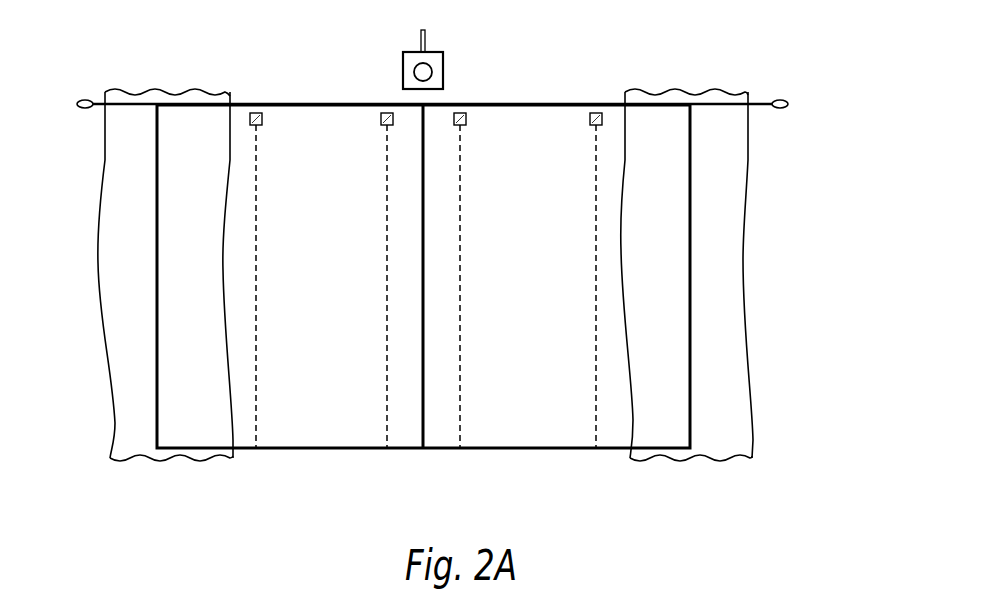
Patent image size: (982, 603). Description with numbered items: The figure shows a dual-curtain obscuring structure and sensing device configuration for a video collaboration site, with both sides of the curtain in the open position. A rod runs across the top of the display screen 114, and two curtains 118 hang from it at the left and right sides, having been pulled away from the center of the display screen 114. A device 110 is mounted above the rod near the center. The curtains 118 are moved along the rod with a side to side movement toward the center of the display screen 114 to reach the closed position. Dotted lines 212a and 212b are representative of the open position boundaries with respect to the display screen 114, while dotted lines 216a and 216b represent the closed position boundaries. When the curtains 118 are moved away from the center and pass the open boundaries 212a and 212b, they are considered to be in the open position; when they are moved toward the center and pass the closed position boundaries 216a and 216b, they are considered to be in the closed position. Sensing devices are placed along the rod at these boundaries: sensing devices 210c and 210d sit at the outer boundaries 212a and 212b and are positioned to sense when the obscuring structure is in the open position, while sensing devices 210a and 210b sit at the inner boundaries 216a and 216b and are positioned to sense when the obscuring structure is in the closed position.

The sensor device / controller 110 is at (438, 60).
The display screen 114 is at (582, 449).
The curtains 118 is at (653, 240).
The sensing device 210a is at (381, 122).
The sensing device 210b is at (466, 120).
The sensing device 210c is at (263, 118).
The sensing device 210d is at (590, 113).
The open position boundary 212a is at (256, 383).
The open position boundary 212b is at (595, 373).
The closed position boundary 216a is at (387, 449).
The closed position boundary 216b is at (461, 449).